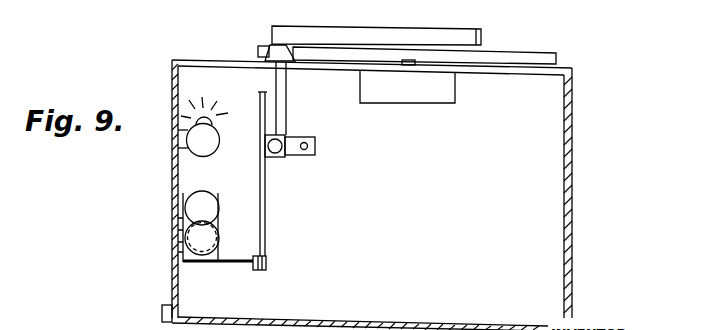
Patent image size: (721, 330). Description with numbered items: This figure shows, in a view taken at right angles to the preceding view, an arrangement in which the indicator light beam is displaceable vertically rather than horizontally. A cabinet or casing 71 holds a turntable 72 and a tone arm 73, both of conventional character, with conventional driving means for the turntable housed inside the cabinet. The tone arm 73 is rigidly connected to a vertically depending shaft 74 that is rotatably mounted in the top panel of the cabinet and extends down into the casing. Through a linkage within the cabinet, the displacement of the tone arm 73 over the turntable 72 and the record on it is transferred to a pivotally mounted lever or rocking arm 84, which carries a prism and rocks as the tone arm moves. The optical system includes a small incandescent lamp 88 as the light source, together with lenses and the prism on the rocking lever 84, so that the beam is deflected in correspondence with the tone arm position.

The cabinet 71 is at (566, 178).
The turntable 72 is at (552, 58).
The tone arm 73 is at (450, 45).
The shaft 74 is at (282, 98).
The lever 84 is at (262, 197).
The incandescent lamp 88 is at (205, 112).